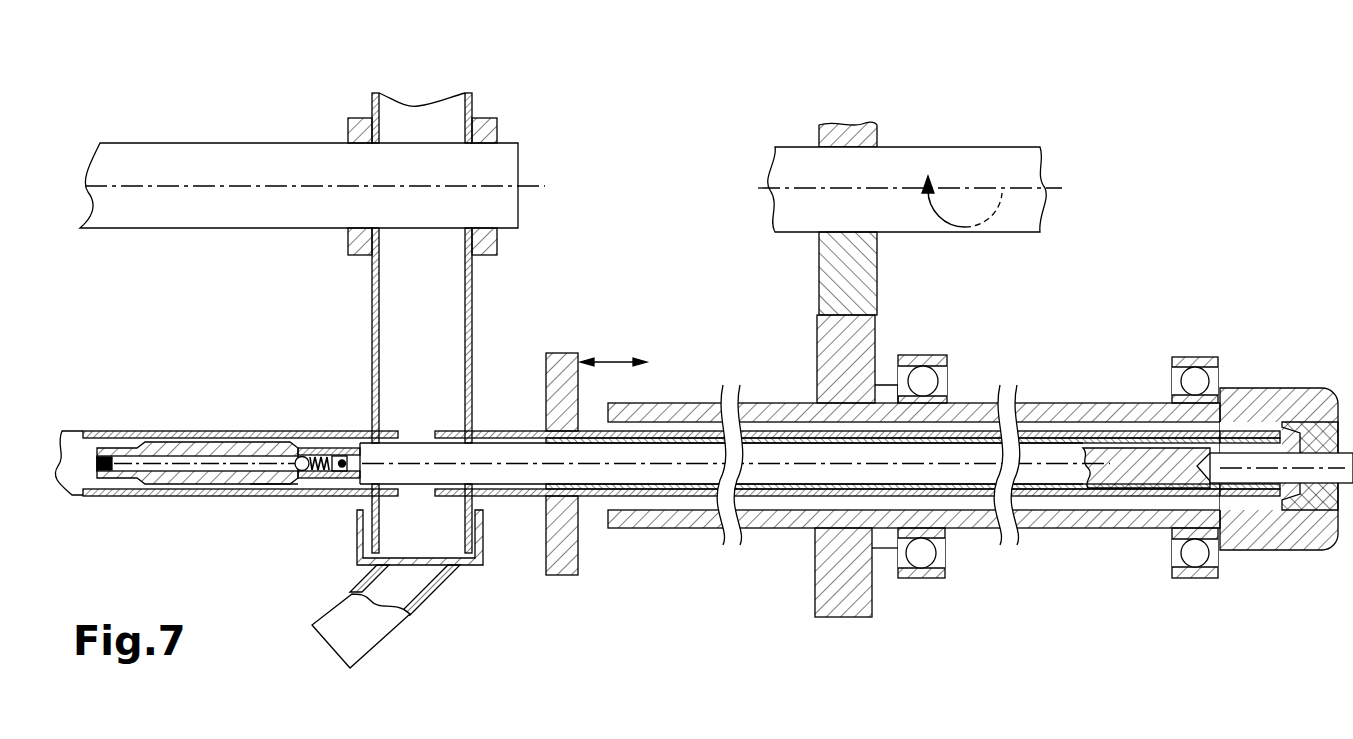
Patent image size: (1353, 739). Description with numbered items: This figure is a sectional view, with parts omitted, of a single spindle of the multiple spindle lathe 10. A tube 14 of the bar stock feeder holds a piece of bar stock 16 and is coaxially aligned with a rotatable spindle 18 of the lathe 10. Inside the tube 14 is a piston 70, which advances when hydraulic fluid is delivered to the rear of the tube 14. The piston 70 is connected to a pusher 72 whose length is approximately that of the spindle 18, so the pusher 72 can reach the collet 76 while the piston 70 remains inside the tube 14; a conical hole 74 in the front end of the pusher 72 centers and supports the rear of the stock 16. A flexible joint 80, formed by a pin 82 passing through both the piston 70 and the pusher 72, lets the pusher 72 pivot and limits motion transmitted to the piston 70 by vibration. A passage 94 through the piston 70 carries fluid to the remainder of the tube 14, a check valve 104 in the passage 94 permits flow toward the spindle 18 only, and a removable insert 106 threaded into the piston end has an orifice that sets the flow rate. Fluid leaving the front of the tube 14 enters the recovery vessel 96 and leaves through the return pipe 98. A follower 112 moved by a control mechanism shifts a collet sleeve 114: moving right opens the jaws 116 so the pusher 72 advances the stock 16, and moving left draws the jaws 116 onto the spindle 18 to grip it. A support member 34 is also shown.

The multiple spindle lathe 10 is at (422, 88).
The tube 14 is at (98, 497).
The bar stock 16 is at (1306, 486).
The rotatable spindle 18 is at (1094, 362).
The support arm 34 is at (497, 181).
The piston 70 is at (214, 444).
The pusher 72 is at (410, 451).
The conical hole 74 is at (1218, 466).
The collet 76 is at (1338, 546).
The flexible joint 80 is at (330, 499).
The pin 82 is at (335, 441).
The passage 94 is at (158, 471).
The recovery vessel 96 is at (467, 567).
The return pipe 98 is at (339, 656).
The check valve 104 is at (286, 486).
The removable insert 106 is at (110, 456).
The follower 112 is at (565, 352).
The collet sleeve 114 is at (676, 428).
The jaws 116 is at (1343, 406).